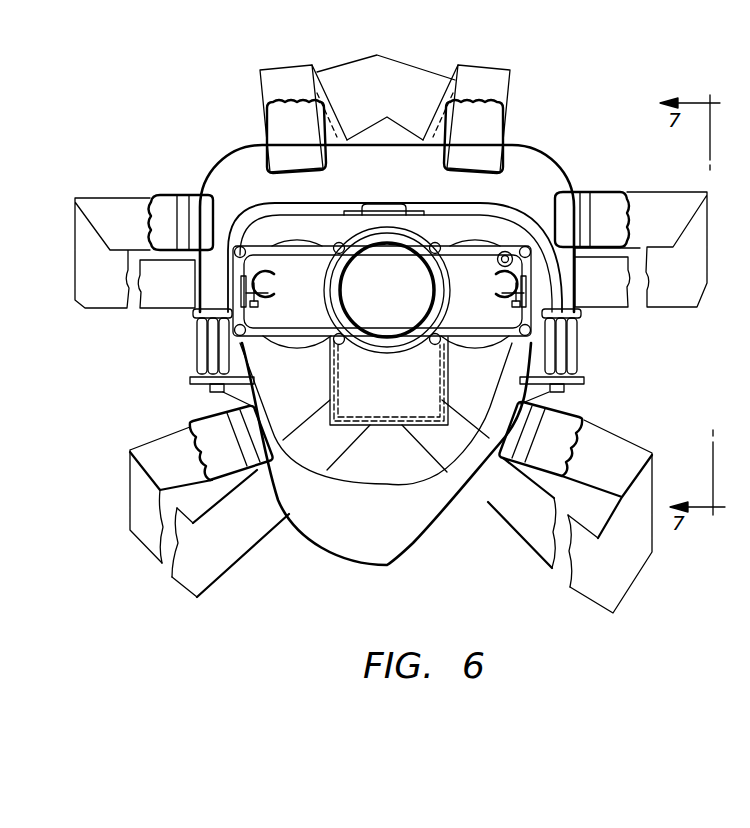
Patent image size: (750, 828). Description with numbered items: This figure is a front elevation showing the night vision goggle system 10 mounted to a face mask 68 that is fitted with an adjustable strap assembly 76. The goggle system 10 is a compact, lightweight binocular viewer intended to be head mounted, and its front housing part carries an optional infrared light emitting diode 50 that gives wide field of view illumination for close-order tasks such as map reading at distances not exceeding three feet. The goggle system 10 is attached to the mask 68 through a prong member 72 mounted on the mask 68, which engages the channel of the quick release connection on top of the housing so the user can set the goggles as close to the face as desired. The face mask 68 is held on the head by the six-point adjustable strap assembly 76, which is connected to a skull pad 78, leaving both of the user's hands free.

The night vision goggle system 10 is at (314, 294).
The infrared light emitting diode 50 is at (497, 263).
The face mask 68 is at (551, 157).
The prong member 72 is at (440, 220).
The adjustable strap assembly 76 is at (173, 198).
The skull pad 78 is at (400, 394).